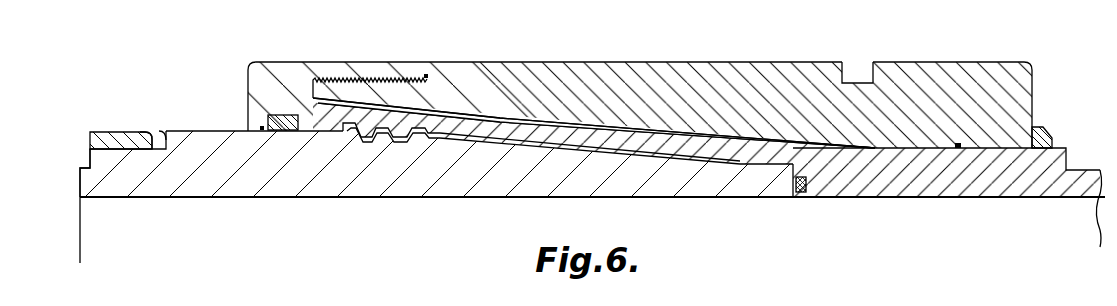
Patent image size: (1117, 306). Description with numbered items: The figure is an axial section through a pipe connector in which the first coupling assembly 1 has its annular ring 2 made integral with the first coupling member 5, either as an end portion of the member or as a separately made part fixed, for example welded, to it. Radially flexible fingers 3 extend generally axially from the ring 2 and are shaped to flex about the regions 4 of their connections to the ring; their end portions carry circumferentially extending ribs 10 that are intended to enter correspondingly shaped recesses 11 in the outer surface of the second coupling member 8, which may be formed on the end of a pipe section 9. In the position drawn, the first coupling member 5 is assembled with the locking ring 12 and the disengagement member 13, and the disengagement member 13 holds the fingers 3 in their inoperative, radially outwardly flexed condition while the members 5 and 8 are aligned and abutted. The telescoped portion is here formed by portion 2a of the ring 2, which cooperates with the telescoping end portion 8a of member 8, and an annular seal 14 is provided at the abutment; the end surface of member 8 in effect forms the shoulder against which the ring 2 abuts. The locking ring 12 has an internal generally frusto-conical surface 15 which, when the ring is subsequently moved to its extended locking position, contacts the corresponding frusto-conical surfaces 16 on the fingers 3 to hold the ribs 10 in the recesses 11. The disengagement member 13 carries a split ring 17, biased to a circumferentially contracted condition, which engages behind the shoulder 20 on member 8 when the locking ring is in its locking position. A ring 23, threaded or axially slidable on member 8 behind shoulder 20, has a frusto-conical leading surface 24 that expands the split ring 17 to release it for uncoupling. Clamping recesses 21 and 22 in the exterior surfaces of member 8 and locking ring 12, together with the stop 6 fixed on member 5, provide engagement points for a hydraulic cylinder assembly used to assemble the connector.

The first coupling assembly 1 is at (1083, 147).
The annular ring 2 is at (932, 185).
The telescoped portion 2a is at (757, 162).
The radially flexible fingers 3 is at (611, 148).
The connection regions 4 is at (727, 159).
The first coupling member 5 is at (1027, 199).
The stop 6 is at (1040, 127).
The second coupling member 8 is at (517, 170).
The telescoping end portion 8a is at (745, 182).
The pipe section 9 is at (100, 188).
The ribs 10 is at (400, 143).
The recesses 11 is at (374, 131).
The locking ring 12 is at (953, 83).
The disengagement member 13 is at (297, 74).
The annular seal 14 is at (805, 185).
The frusto-conical surface 15 is at (653, 130).
The frusto-conical surfaces 16 is at (594, 130).
The split ring 17 is at (262, 127).
The shoulder 20 is at (166, 131).
The clamping recess 21 is at (82, 157).
The clamping recess 22 is at (872, 63).
The ring 23 is at (105, 132).
The frusto-conical leading surface 24 is at (148, 132).